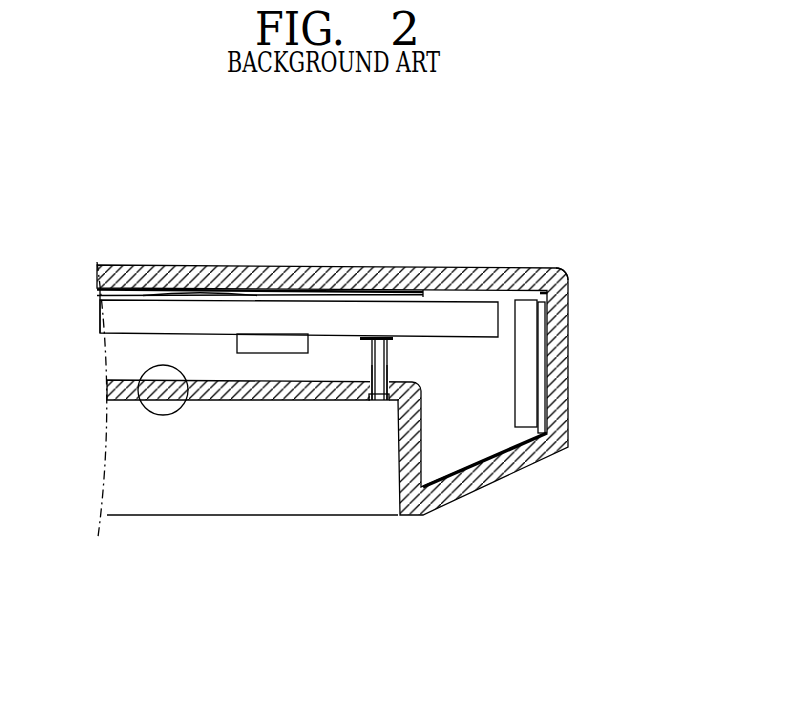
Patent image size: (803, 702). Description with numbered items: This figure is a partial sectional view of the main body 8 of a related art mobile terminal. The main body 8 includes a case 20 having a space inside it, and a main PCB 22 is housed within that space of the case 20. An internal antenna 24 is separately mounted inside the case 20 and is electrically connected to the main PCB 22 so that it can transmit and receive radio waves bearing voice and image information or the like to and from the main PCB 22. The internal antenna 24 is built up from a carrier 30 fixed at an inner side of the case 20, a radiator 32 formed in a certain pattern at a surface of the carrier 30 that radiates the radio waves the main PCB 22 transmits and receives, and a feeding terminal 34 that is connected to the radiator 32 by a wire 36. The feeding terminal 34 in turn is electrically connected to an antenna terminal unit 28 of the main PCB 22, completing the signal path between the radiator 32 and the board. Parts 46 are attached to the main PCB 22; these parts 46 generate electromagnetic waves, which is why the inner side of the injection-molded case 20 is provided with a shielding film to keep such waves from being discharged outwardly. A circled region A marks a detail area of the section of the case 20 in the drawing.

The main body 8 is at (578, 274).
The case 20 is at (558, 406).
The main PCB 22 is at (140, 313).
The internal antenna 24 is at (550, 297).
The antenna terminal unit 28 is at (383, 340).
The carrier 30 is at (525, 343).
The radiator 32 is at (538, 372).
The feeding terminal 34 is at (370, 365).
The wire 36 is at (487, 463).
The parts 46 is at (263, 353).
The detail region A is at (143, 411).